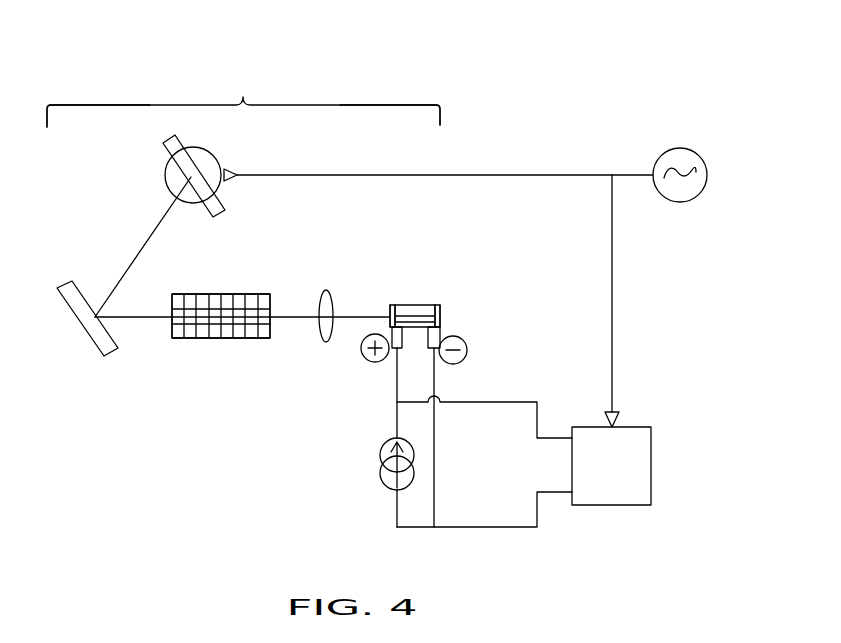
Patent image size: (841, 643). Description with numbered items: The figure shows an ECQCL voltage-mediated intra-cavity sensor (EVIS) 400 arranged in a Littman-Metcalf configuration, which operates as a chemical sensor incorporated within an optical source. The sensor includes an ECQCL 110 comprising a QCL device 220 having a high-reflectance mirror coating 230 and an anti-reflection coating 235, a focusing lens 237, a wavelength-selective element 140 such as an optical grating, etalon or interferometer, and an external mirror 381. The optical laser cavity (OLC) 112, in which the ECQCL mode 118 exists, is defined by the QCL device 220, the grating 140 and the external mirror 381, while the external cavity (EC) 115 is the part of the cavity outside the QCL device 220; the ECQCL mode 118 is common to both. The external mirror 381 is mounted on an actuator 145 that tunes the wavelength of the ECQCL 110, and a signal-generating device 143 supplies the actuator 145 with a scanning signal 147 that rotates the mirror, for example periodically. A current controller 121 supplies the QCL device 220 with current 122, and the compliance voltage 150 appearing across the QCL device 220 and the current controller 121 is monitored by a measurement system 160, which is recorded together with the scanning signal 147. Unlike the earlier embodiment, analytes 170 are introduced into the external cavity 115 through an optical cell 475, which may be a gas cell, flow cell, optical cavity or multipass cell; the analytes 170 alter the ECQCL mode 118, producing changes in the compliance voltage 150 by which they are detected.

The ECQCL voltage-mediated intra-cavity sensor (EVIS) 400 is at (630, 100).
The ECQCL 110 is at (243, 97).
The optical laser cavity (OLC) 112 is at (93, 103).
The external cavity (EC) 115 is at (391, 104).
The ECQCL mode 118 is at (133, 258).
The current controller 121 is at (380, 483).
The current 122 is at (396, 386).
The wavelength-selective element 140 is at (92, 343).
The signal-generating device 143 is at (683, 202).
The actuator 145 is at (163, 170).
The scanning signal 147 is at (535, 173).
The compliance voltage 150 is at (512, 405).
The measurement system 160 is at (591, 478).
The analyte 170 is at (200, 326).
The QCL device 220 is at (400, 305).
The high-reflectance mirror coating 230 is at (437, 310).
The anti-reflection coating 235 is at (392, 318).
The focusing lens 237 is at (322, 290).
The external mirror 381 is at (212, 150).
The optical cell 475 is at (243, 340).